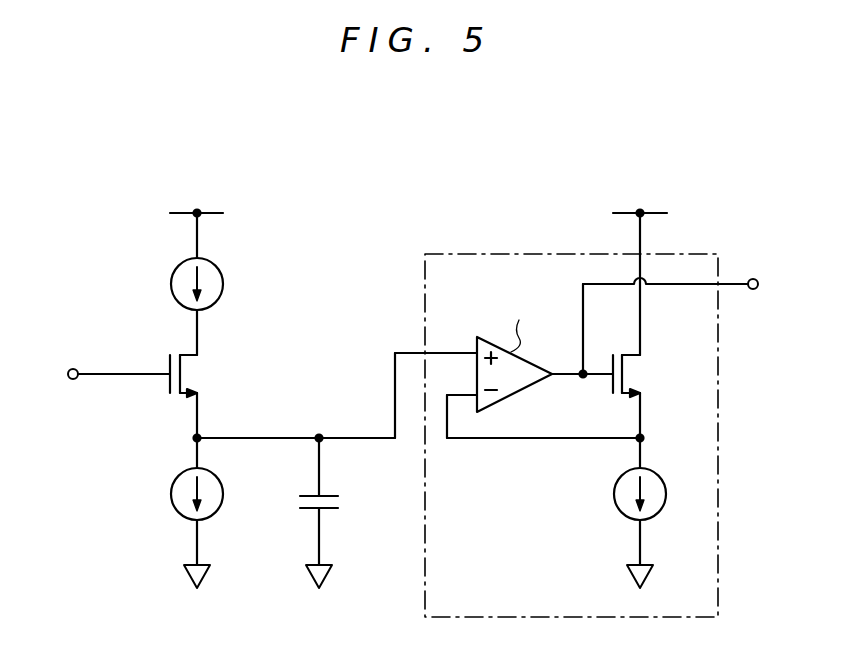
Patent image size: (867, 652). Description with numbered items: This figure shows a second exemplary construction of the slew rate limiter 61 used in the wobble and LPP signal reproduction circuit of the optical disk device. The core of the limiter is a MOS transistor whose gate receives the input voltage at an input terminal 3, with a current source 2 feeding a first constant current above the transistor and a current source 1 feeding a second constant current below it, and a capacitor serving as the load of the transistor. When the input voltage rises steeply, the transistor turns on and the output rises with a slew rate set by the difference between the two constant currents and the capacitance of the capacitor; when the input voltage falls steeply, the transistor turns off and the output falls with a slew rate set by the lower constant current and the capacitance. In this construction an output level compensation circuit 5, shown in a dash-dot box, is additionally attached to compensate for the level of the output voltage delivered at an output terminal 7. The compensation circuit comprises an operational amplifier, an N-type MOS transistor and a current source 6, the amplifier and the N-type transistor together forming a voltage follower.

The slew rate limiter 61 is at (551, 156).
The current source 1 is at (171, 493).
The current source 2 is at (171, 283).
The input terminal Vin 3 is at (73, 368).
The output level compensation circuit 5 is at (720, 428).
The current source 6 is at (614, 493).
The output terminal Vout 7 is at (757, 279).